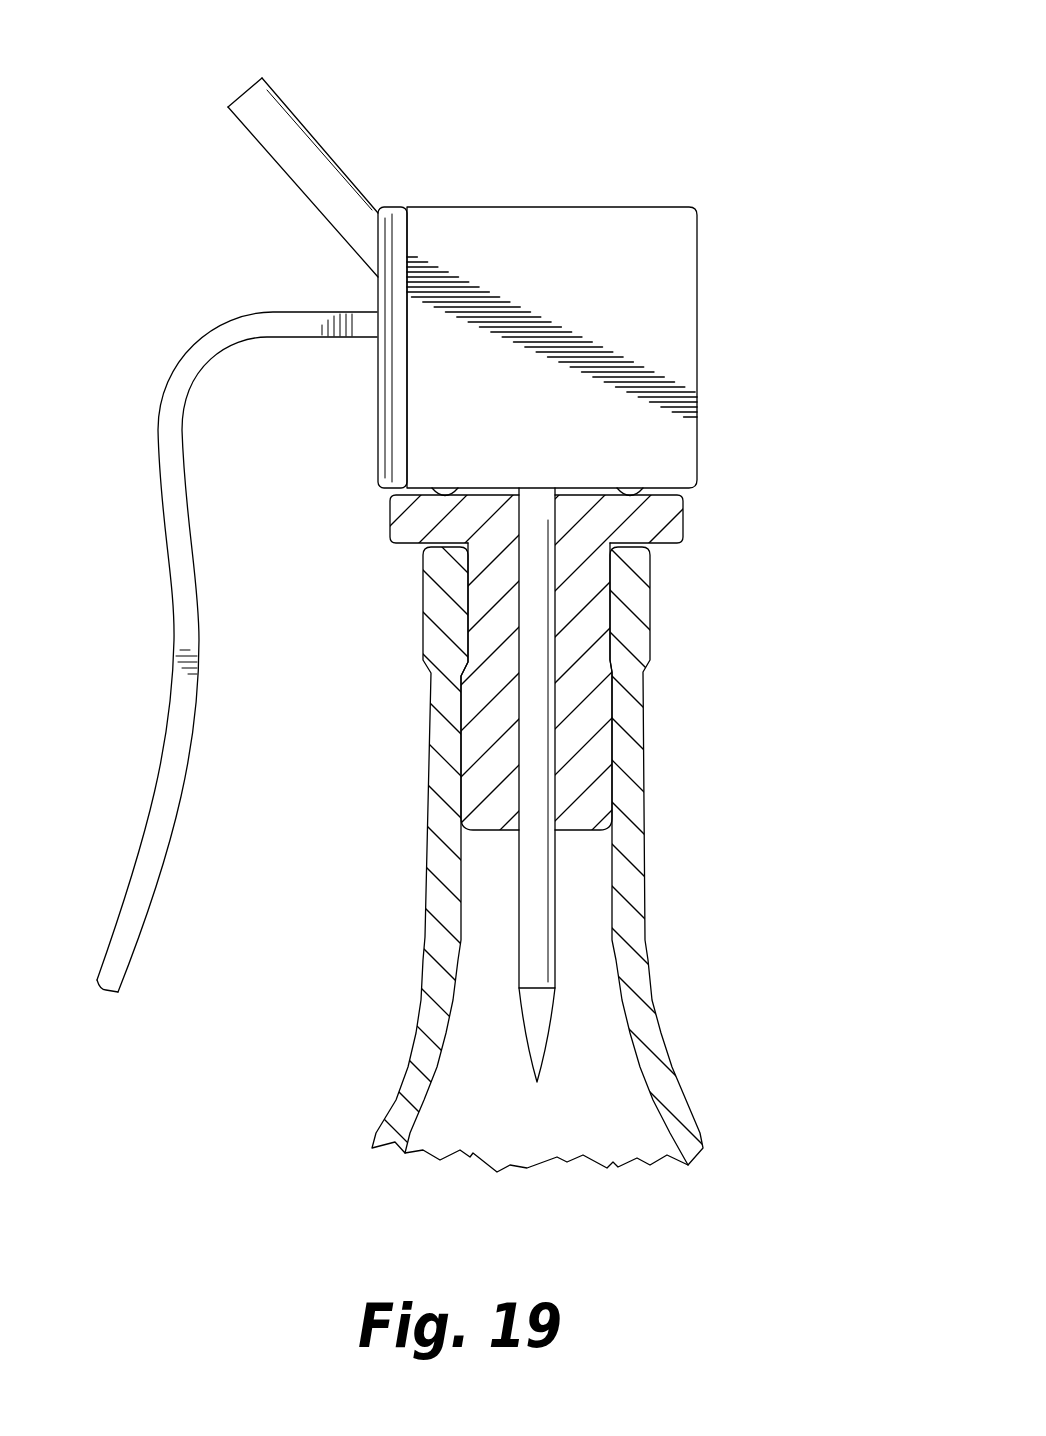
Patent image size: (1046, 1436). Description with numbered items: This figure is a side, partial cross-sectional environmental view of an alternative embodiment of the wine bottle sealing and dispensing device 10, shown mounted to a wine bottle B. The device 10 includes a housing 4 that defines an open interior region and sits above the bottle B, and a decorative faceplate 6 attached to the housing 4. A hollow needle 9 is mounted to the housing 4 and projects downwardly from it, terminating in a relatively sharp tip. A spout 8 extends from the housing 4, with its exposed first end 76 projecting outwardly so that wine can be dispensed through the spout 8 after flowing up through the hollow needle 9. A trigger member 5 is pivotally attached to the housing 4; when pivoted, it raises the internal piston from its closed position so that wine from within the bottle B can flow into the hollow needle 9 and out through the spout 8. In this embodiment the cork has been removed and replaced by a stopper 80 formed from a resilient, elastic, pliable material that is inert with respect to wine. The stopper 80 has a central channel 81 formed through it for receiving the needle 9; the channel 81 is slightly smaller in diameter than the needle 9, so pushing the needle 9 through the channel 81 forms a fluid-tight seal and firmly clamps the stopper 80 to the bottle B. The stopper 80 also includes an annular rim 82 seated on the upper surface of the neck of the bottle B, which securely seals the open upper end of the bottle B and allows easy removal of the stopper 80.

The wine bottle sealing and dispensing device 10 is at (732, 247).
The housing 4 is at (697, 347).
The decorative faceplate 6 is at (377, 438).
The spout 8 is at (297, 187).
The first end of the spout 76 is at (240, 84).
The trigger member 5 is at (175, 368).
The annular rim 82 is at (683, 518).
The stopper 80 is at (590, 655).
The central channel 81 is at (462, 661).
The hollow needle 9 is at (520, 862).
The wine bottle B is at (647, 722).